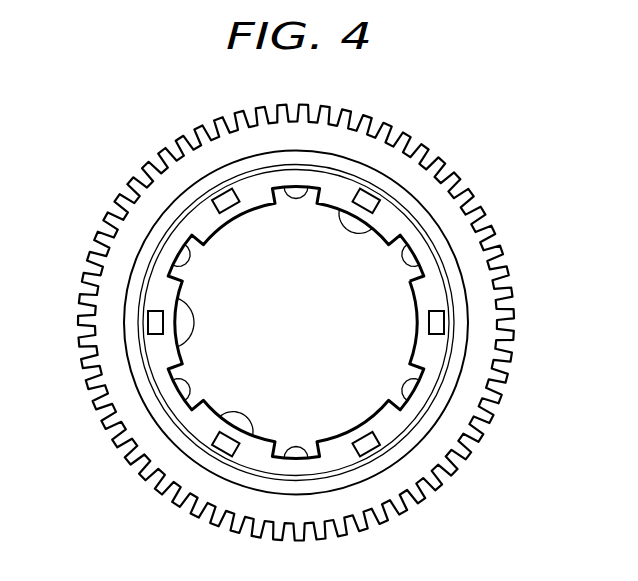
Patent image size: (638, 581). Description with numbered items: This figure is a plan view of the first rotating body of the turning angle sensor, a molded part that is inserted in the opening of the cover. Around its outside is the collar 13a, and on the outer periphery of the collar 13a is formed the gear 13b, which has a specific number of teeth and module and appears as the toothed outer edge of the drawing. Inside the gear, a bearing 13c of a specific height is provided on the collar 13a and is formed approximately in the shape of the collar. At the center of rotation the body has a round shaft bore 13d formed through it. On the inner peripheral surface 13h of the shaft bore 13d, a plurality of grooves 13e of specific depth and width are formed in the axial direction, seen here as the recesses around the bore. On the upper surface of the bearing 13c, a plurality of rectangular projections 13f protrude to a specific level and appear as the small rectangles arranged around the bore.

The collar 13a is at (484, 305).
The gear 13b is at (507, 388).
The bearing 13c is at (341, 186).
The shaft bore 13d is at (325, 406).
The grooves 13e is at (186, 242).
The rectangular projections 13f is at (226, 198).
The inner peripheral surface 13h is at (353, 231).